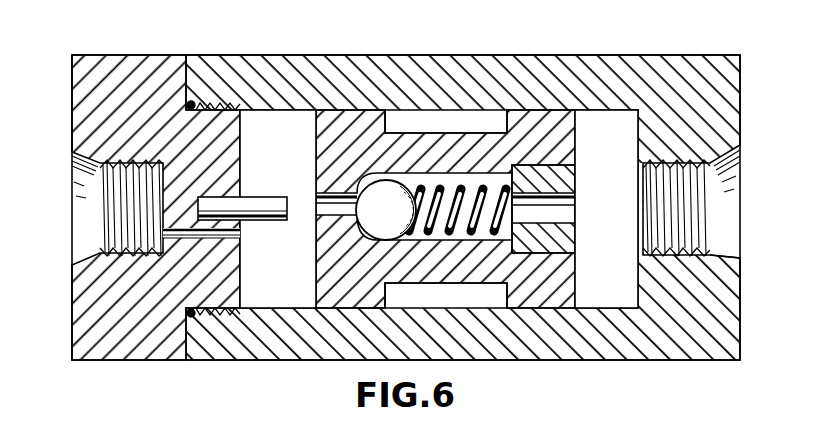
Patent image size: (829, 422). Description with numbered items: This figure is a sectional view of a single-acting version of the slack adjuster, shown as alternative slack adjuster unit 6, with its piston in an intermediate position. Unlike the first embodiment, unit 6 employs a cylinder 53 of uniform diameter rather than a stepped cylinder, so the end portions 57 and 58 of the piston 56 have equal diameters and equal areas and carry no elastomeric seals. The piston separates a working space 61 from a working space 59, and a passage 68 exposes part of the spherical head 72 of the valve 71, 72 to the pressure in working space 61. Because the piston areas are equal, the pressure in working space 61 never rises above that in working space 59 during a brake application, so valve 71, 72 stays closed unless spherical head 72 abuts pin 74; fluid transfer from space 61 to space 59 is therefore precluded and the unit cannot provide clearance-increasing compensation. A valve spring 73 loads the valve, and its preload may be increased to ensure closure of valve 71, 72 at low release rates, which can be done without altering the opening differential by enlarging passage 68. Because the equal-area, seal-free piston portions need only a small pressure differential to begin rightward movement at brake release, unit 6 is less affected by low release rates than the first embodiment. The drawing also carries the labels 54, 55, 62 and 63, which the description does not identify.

The slack adjuster unit 6 is at (571, 362).
The cylinder 53 is at (258, 55).
The outlet port 54 is at (742, 142).
The end cap 55 is at (154, 55).
The piston 56 is at (473, 120).
The end portion 57 is at (528, 108).
The end portion 58 is at (342, 108).
The working space 59 is at (625, 196).
The working space 61 is at (296, 152).
The outlet chamfer 62 is at (742, 256).
The inlet port 63 is at (82, 262).
The passage 68 is at (317, 212).
The valve 71 is at (382, 182).
The spherical head 72 is at (420, 186).
The valve spring 73 is at (432, 232).
The pin 74 is at (259, 221).